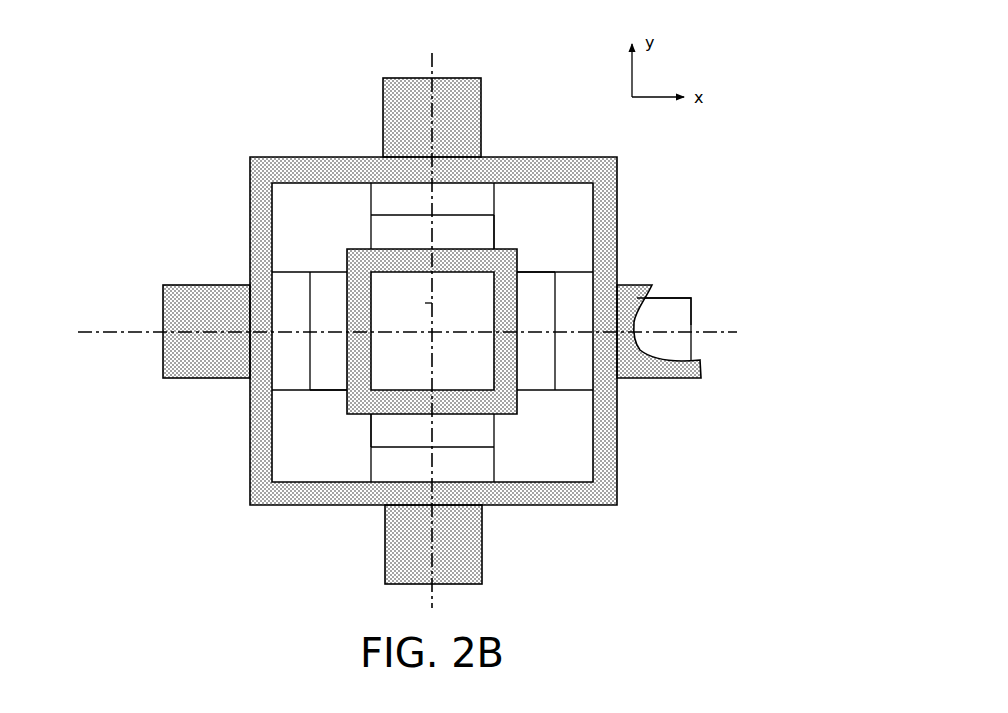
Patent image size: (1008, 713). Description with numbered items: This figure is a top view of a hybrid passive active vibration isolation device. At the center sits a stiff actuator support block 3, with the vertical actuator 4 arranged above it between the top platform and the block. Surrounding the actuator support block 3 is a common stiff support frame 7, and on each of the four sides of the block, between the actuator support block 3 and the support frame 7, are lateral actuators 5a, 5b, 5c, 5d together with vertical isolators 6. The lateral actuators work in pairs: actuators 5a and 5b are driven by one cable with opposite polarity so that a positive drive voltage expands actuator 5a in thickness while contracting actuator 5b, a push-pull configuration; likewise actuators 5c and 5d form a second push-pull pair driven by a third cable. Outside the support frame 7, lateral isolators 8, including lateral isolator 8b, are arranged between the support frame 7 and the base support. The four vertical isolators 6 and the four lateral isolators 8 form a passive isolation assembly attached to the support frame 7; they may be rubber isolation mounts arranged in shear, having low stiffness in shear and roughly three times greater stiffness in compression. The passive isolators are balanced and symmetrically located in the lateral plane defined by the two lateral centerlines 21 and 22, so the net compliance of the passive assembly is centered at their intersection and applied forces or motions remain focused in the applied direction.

The actuator support block 3 is at (338, 253).
The vertical actuator 4 is at (423, 303).
The lateral actuator 5a is at (332, 393).
The lateral actuator 5b is at (536, 269).
The lateral actuator 5c is at (499, 225).
The lateral actuator 5d is at (371, 429).
The vertical isolator 6 is at (574, 355).
The support frame 7 is at (473, 120).
The lateral isolator 8 is at (692, 343).
The lateral isolator 8b is at (682, 305).
The lateral centerline 21 is at (436, 67).
The lateral centerline 22 is at (104, 330).